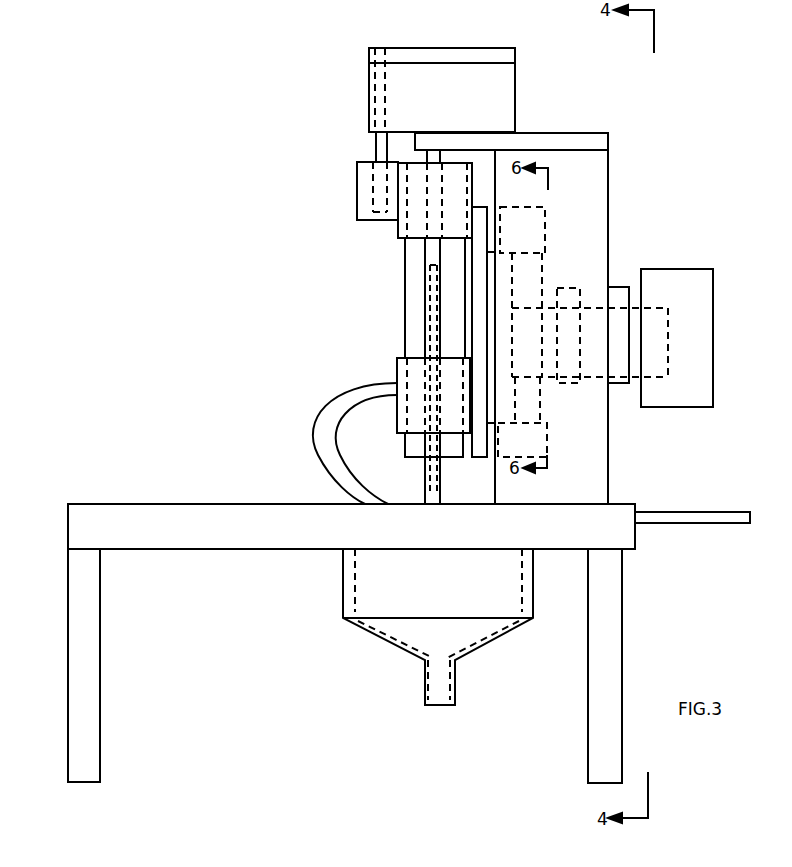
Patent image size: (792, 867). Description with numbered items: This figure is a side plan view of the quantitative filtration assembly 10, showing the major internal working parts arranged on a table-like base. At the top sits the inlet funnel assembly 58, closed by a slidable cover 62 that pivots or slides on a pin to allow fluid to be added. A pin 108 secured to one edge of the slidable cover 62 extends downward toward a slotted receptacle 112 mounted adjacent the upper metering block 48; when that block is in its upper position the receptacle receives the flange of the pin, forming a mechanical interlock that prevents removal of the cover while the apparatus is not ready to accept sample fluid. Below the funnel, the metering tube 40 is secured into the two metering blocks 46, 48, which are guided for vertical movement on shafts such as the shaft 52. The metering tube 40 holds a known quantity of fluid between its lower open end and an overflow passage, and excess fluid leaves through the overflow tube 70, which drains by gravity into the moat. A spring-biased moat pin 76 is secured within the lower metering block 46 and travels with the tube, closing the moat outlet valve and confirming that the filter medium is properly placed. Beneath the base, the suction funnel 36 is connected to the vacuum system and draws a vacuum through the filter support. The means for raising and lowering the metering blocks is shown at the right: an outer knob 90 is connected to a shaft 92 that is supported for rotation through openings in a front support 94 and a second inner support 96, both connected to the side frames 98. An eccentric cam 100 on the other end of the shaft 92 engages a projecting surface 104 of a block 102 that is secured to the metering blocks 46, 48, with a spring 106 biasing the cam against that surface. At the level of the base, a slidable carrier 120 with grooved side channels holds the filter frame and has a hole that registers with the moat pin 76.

The quantitative filtration assembly 10 is at (258, 357).
The suction funnel 36 is at (350, 593).
The metering tube 40 is at (410, 318).
The lower metering block 46 is at (400, 367).
The upper metering block 48 is at (413, 215).
The guide shaft 52 is at (425, 467).
The inlet funnel assembly 58 is at (502, 100).
The slidable cover 62 is at (507, 57).
The overflow tube 70 is at (320, 442).
The moat pin 76 is at (440, 478).
The outer knob 90 is at (695, 392).
The shaft 92 is at (635, 370).
The front support 94 is at (620, 337).
The second inner support 96 is at (570, 383).
The side frames 98 is at (597, 228).
The cam 100 is at (542, 270).
The block 102 is at (482, 228).
The projecting surface 104 is at (545, 207).
The spring 106 is at (540, 400).
The pin 108 is at (378, 140).
The slotted receptacle 112 is at (363, 180).
The slidable carrier 120 is at (716, 506).